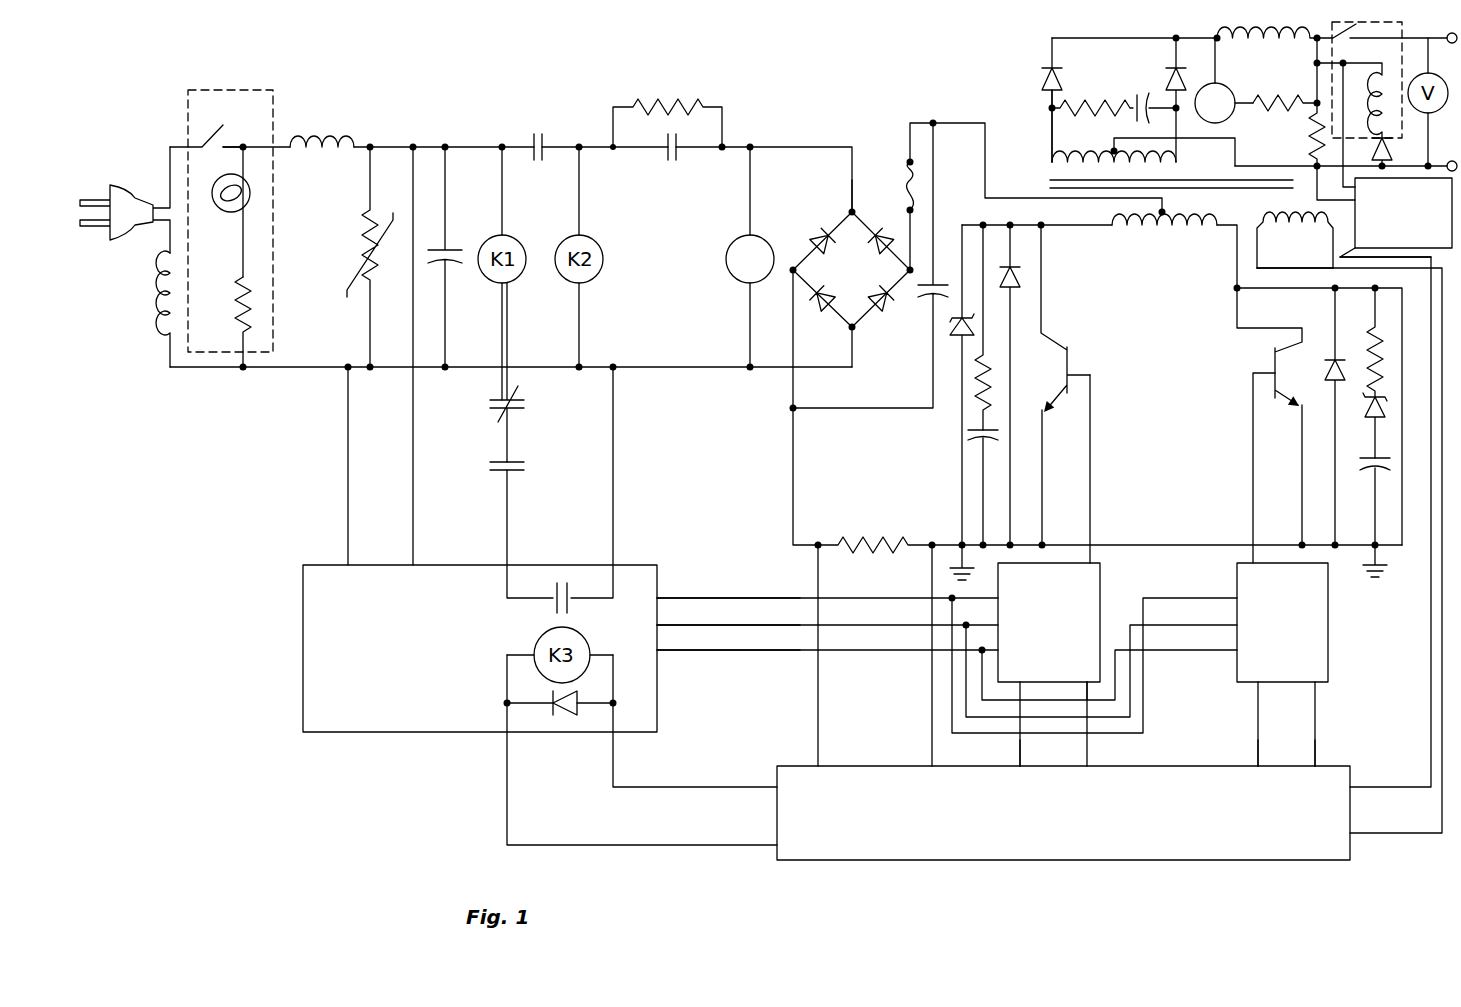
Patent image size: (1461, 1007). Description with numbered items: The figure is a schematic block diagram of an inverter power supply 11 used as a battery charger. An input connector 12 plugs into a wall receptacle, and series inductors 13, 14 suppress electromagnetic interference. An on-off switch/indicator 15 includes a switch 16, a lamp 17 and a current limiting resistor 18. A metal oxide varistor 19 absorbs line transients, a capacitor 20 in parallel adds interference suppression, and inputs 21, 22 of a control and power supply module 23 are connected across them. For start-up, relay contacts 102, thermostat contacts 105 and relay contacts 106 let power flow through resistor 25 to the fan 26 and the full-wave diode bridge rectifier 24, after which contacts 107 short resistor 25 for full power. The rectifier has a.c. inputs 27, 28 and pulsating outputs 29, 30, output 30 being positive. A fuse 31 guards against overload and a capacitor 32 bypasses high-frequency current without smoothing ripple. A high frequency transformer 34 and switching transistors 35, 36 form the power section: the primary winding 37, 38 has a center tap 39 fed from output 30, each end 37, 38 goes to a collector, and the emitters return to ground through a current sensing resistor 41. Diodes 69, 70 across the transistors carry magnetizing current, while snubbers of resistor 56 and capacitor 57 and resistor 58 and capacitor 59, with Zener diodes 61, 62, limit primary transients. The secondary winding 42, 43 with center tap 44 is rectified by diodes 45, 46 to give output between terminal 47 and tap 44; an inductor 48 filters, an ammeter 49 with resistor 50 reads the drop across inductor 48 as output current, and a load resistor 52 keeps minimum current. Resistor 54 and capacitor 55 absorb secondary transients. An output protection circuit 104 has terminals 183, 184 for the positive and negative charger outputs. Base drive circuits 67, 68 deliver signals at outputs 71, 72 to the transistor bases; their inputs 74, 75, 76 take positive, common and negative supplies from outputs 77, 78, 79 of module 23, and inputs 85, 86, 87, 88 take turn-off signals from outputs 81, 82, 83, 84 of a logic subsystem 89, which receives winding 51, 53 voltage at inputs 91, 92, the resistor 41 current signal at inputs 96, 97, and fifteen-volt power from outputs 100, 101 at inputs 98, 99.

The inverter 11 is at (412, 81).
The input connector 12 is at (125, 186).
The inductor 13 is at (160, 293).
The inductor 14 is at (338, 140).
The on-off switch/indicator 15 is at (236, 85).
The switch 16 is at (220, 126).
The lamp 17 is at (214, 205).
The current limiting resistor 18 is at (237, 305).
The metal oxide varistor 19 is at (362, 252).
The capacitor 20 is at (452, 250).
The input 21 is at (350, 560).
The input 22 is at (416, 560).
The control and power supply module 23 is at (296, 660).
The full-wave diode bridge rectifier 24 is at (866, 278).
The resistor 25 is at (665, 105).
The fan 26 is at (727, 250).
The input 27 is at (848, 212).
The input 28 is at (848, 328).
The output 29 is at (791, 274).
The output 30 is at (908, 275).
The fuse 31 is at (905, 185).
The capacitor 32 is at (940, 280).
The high frequency transformer 34 is at (1058, 180).
The switching transistor 35 is at (1072, 365).
The transistor 36 is at (1272, 362).
The primary winding end 37 is at (1070, 228).
The primary winding end 38 is at (1228, 228).
The center tap 39 is at (1167, 213).
The current sensing resistor 41 is at (862, 542).
The secondary winding end 42 is at (1052, 137).
The secondary winding end 43 is at (1178, 165).
The center tap 44 is at (1112, 150).
The diode 45 is at (1046, 78).
The diode 46 is at (1170, 80).
The terminal 47 is at (1173, 36).
The inductor 48 is at (1262, 30).
The ammeter 49 is at (1228, 86).
The resistor 50 is at (1278, 98).
The transformer winding end 51 is at (1295, 240).
The load resistor 52 is at (1310, 140).
The transformer winding end 53 is at (1295, 252).
The resistor 54 is at (1085, 100).
The capacitor 55 is at (1135, 100).
The resistor 56 is at (990, 392).
The capacitor 57 is at (975, 437).
The resistor 58 is at (1370, 335).
The capacitor 59 is at (1370, 472).
The Zener diode 61 is at (955, 335).
The Zener diode 62 is at (1382, 412).
The base drive circuit 67 is at (1100, 585).
The base drive circuit 68 is at (1237, 575).
The diode 69 is at (1022, 287).
The diode 70 is at (1330, 372).
The output 71 is at (1255, 560).
The output 72 is at (1090, 560).
The input 74 is at (948, 600).
The input 75 is at (962, 627).
The input 76 is at (978, 652).
The output 77 is at (660, 598).
The output 78 is at (660, 625).
The output 79 is at (660, 650).
The output 81 is at (1018, 764).
The output 82 is at (1089, 762).
The output 83 is at (1258, 764).
The output 84 is at (1315, 764).
The input 85 is at (1022, 690).
The input 86 is at (1089, 685).
The input 87 is at (1258, 688).
The input 88 is at (1315, 688).
The logic subsystem 89 is at (1142, 862).
The input 91 is at (1352, 787).
The input 92 is at (1352, 834).
The input 96 is at (822, 762).
The input 97 is at (930, 762).
The input 98 is at (777, 788).
The input 99 is at (775, 845).
The output 100 is at (510, 735).
The output 101 is at (611, 735).
The relay contacts 102 is at (567, 580).
The output protection circuit 104 is at (1421, 216).
The thermostat contacts 105 is at (522, 408).
The relay contacts 106 is at (545, 135).
The relay contacts 107 is at (668, 158).
The terminal 183 is at (1318, 199).
The terminal 184 is at (1338, 262).